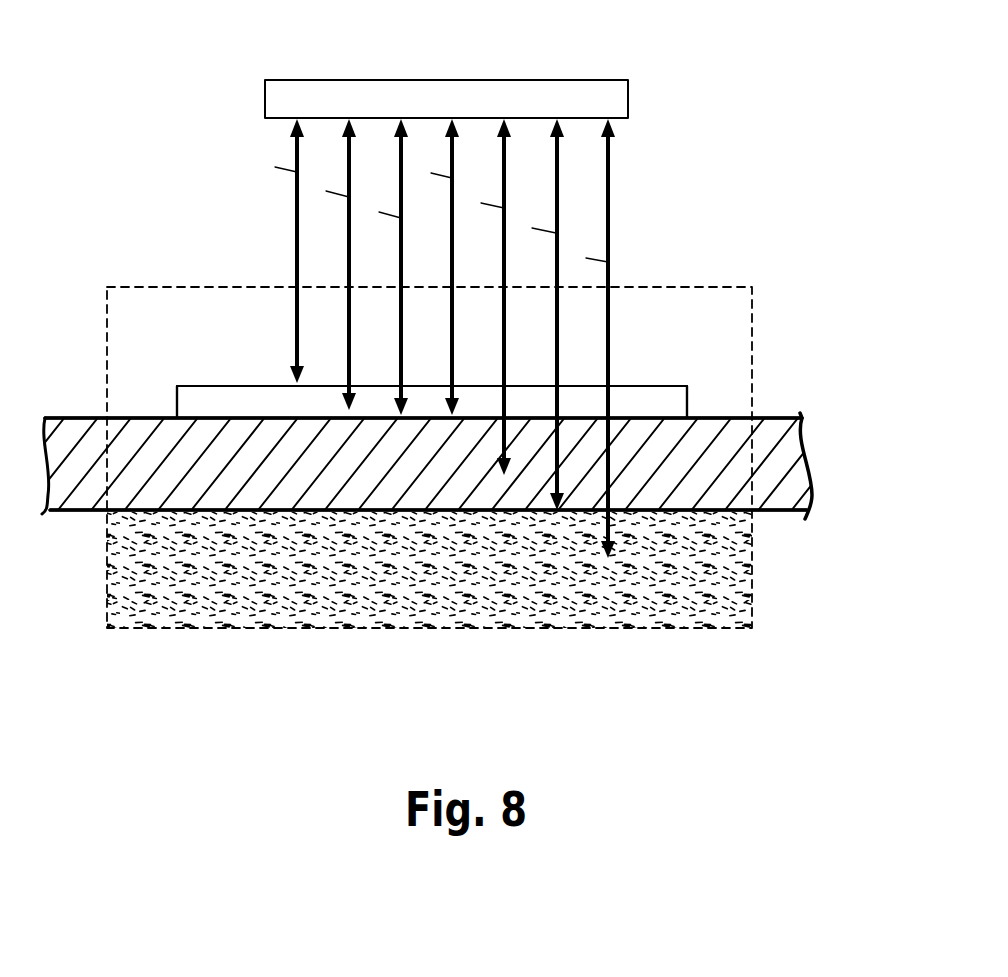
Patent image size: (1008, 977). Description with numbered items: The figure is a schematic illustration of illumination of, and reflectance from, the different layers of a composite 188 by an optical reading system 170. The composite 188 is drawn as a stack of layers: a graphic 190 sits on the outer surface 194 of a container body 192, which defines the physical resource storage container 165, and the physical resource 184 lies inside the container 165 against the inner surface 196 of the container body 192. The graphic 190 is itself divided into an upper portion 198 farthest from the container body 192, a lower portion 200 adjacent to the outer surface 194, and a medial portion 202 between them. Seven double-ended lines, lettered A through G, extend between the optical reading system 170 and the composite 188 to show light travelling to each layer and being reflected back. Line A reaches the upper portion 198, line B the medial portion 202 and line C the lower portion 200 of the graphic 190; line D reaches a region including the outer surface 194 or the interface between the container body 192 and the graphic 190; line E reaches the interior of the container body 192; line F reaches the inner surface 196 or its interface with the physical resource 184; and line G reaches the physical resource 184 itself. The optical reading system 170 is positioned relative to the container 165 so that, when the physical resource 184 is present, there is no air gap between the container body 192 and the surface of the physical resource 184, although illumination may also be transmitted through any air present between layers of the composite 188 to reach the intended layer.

The optical reading system 170 is at (355, 77).
The composite 188 is at (653, 248).
The physical resource storage container 165 is at (762, 405).
The graphic 190 is at (665, 365).
The medial portion 202 is at (220, 405).
The upper portion 198 is at (197, 386).
The lower portion 200 is at (192, 420).
The container body 192 is at (798, 407).
The outer surface 194 is at (775, 417).
The inner surface 196 is at (778, 515).
The physical resource 184 is at (695, 588).